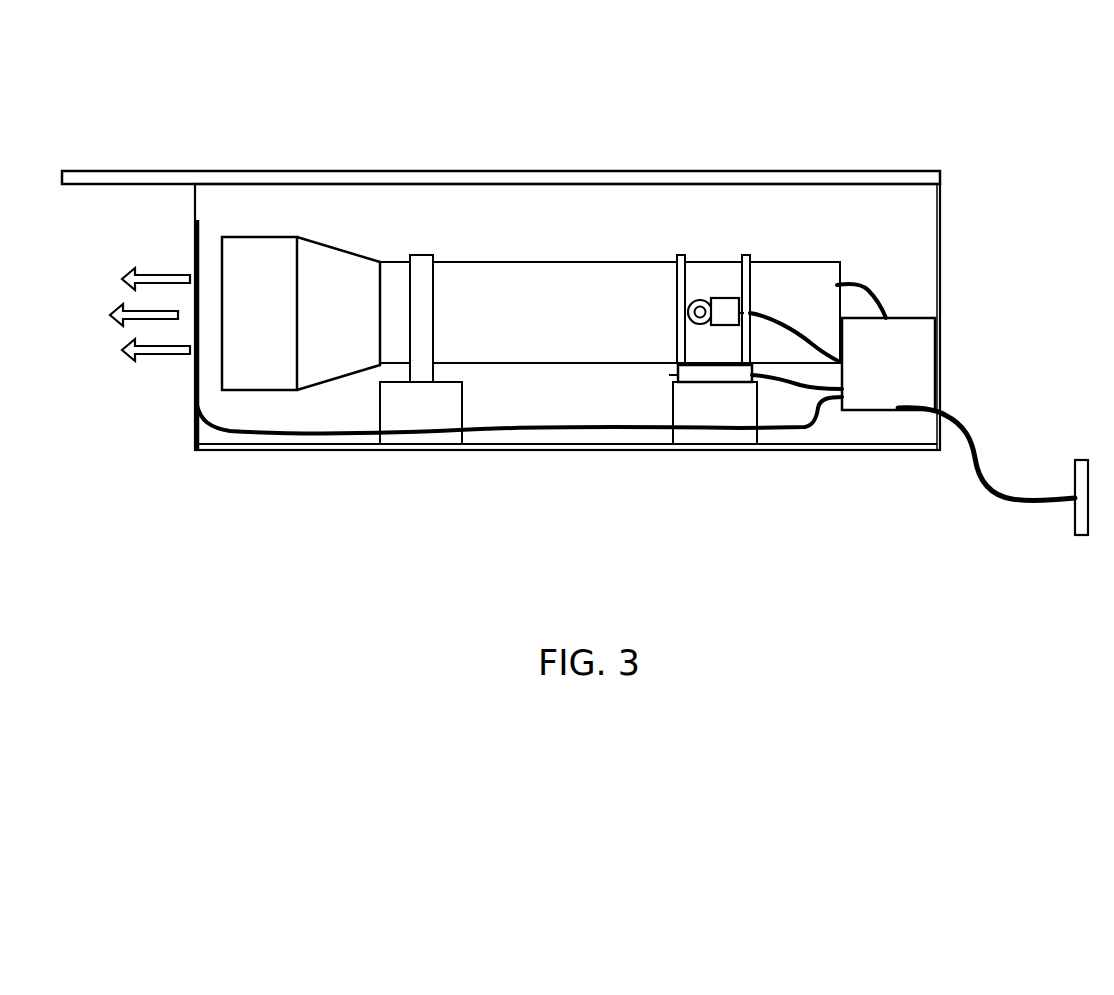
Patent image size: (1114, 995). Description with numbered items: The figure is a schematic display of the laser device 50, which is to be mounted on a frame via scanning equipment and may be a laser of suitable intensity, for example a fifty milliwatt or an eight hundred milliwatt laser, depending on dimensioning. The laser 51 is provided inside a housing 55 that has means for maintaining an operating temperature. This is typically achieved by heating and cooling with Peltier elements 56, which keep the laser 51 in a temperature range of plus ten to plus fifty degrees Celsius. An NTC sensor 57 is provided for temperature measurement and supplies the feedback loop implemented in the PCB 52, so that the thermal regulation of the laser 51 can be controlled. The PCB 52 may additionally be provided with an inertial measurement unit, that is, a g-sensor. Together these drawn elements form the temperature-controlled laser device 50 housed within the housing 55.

The laser device 50 is at (847, 121).
The laser 51 is at (332, 312).
The PCB 52 is at (909, 345).
The housing 55 is at (608, 171).
The Peltier elements 56 is at (712, 372).
The NTC sensor 57 is at (724, 311).